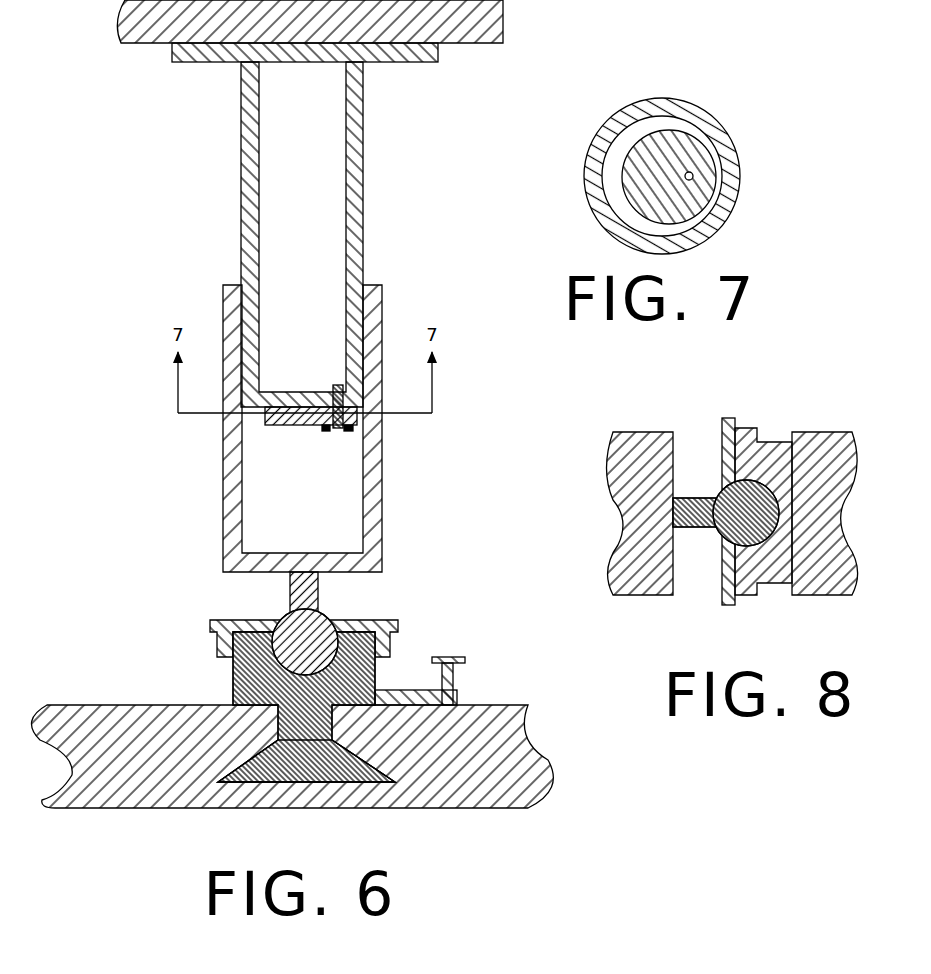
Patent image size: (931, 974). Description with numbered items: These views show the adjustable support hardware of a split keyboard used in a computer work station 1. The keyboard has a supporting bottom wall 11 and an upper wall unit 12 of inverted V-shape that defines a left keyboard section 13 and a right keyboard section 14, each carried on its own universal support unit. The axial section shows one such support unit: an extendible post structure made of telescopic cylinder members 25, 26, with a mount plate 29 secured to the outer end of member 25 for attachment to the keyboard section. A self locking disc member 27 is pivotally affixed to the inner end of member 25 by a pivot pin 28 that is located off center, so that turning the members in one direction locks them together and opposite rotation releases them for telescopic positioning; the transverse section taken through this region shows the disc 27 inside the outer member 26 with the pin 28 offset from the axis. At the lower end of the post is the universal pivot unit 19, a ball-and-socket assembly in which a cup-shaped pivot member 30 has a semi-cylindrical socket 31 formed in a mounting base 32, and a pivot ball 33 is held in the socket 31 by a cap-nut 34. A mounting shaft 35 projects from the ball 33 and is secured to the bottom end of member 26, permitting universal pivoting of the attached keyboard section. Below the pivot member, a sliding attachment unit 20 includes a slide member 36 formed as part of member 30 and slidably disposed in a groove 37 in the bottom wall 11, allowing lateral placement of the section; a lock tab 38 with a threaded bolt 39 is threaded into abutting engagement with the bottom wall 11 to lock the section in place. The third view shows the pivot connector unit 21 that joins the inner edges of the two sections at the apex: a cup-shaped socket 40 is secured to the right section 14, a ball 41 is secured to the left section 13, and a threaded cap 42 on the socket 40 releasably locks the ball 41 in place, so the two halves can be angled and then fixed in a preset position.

In FIG. 6, the computer work station 1 is at (218, 473).
In FIG. 6, the bottom wall 11 is at (525, 728).
In FIG. 6, the upper wall unit 12 is at (470, 45).
In FIG. 8, the left keyboard section 13 is at (658, 430).
In FIG. 8, the right keyboard section 14 is at (805, 430).
In FIG. 6, the universal pivot unit 19 is at (398, 578).
In FIG. 6, the sliding attachment unit 20 is at (365, 788).
In FIG. 8, the pivot connector unit 21 is at (645, 625).
In FIG. 6, the telescopic cylinder member 25 is at (235, 203).
In FIG. 6, the telescopic cylinder member 26 is at (388, 508).
In FIG. 7, the telescopic cylinder member 26 is at (697, 98).
In FIG. 6, the self locking disc member 27 is at (272, 432).
In FIG. 7, the self locking disc member 27 is at (640, 175).
In FIG. 6, the pivot pin 28 is at (333, 433).
In FIG. 7, the pivot pin 28 is at (702, 187).
In FIG. 6, the mount plate 29 is at (400, 67).
In FIG. 6, the cup-shaped pivot member 30 is at (253, 685).
In FIG. 6, the semi-cylindrical socket 31 is at (270, 665).
In FIG. 6, the mounting base 32 is at (382, 672).
In FIG. 6, the pivot ball 33 is at (313, 625).
In FIG. 6, the cap-nut 34 is at (232, 617).
In FIG. 6, the mounting shaft 35 is at (322, 592).
In FIG. 6, the slide member 36 is at (300, 762).
In FIG. 6, the groove 37 is at (230, 790).
In FIG. 6, the lock tab 38 is at (460, 694).
In FIG. 6, the threaded bolt 39 is at (465, 668).
In FIG. 8, the cup-shaped socket 40 is at (778, 587).
In FIG. 8, the ball 41 is at (715, 540).
In FIG. 8, the threaded cap 42 is at (752, 425).